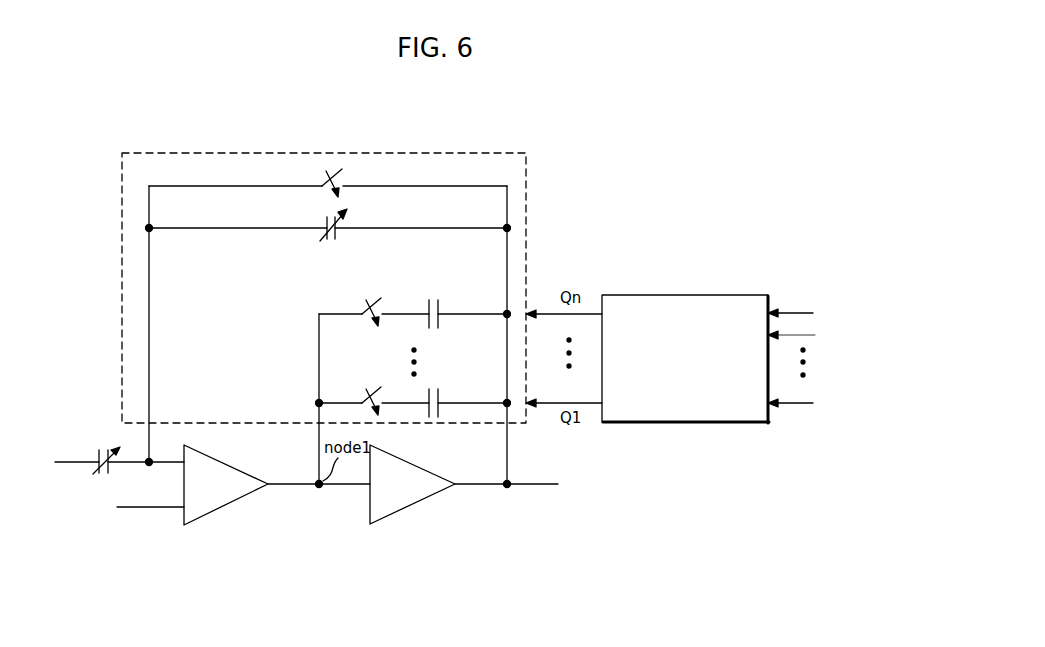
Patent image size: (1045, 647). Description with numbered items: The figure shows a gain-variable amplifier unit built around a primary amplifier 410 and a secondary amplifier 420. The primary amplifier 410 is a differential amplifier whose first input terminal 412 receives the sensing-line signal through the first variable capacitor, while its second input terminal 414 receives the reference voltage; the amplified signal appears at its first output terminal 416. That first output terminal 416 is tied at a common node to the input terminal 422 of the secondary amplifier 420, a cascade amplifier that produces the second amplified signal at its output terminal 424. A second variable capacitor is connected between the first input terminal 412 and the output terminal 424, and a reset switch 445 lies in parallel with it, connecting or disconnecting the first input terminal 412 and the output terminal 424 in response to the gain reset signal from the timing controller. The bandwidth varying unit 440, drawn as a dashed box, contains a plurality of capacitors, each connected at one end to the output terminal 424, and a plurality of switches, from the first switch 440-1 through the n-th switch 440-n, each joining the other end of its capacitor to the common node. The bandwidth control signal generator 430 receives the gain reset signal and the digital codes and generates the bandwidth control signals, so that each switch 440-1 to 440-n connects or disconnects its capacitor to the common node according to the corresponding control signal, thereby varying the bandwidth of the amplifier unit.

The bandwidth varying unit 440 is at (328, 286).
The reset switch 445 is at (338, 166).
The n-th switch 440-n is at (378, 304).
The first switch 440-1 is at (378, 393).
The bandwidth control signal generator 430 is at (676, 294).
The first input terminal 412 is at (166, 460).
The second input terminal 414 is at (170, 509).
The primary amplifier 410 is at (237, 466).
The first output terminal 416 is at (292, 488).
The input terminal 422 is at (349, 488).
The secondary amplifier 420 is at (424, 466).
The output terminal 424 is at (481, 488).